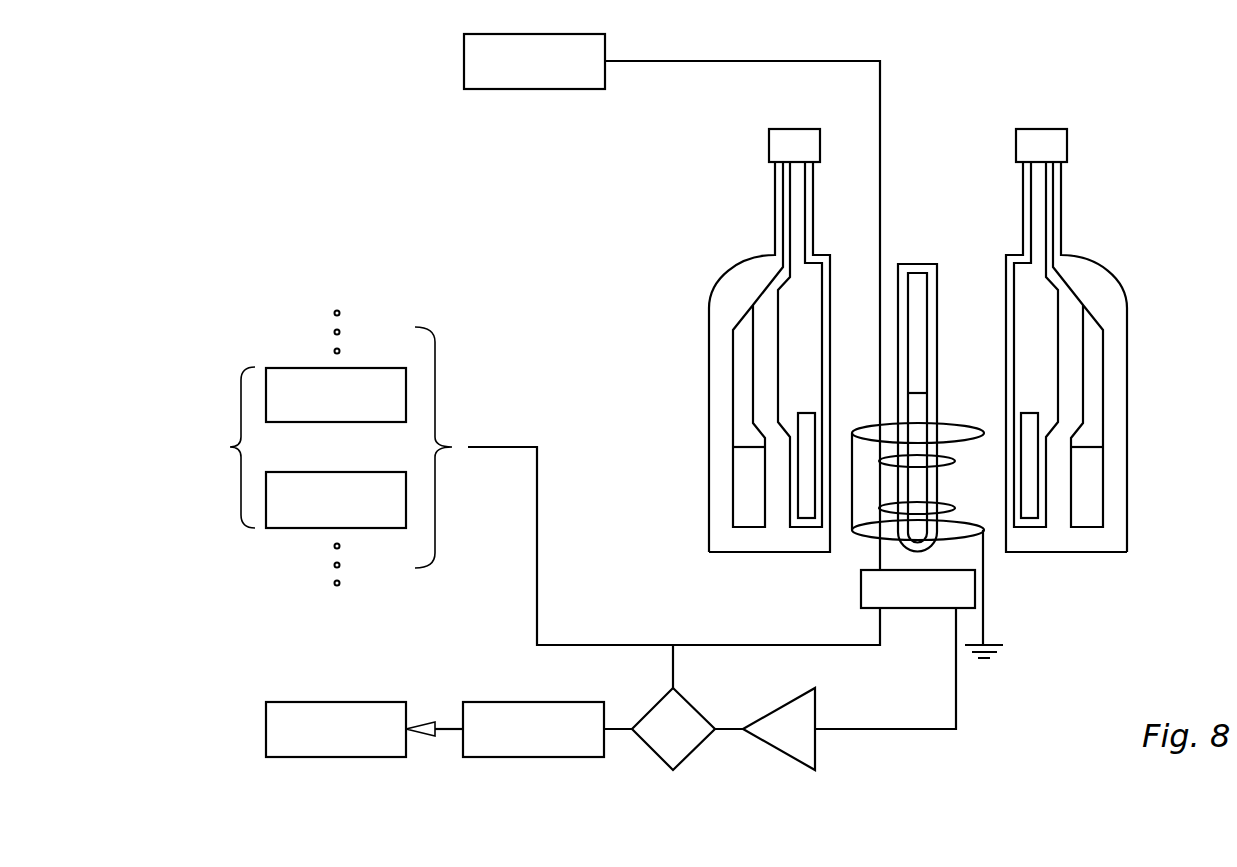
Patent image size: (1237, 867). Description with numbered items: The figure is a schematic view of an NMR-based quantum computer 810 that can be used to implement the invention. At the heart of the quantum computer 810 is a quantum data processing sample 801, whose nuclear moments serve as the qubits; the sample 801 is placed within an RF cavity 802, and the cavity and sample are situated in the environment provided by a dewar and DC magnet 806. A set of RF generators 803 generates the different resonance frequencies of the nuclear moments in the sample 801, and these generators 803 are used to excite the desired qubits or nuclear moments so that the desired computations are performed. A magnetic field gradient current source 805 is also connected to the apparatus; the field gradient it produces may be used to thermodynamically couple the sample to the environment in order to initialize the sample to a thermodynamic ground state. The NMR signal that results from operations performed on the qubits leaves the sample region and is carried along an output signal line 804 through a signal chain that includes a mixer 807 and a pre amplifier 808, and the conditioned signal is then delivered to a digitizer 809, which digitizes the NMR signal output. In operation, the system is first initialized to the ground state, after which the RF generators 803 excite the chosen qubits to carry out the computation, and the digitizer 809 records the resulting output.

The quantum data processing sample 801 is at (918, 488).
The RF cavity 802 is at (955, 417).
The set of RF generators 803 is at (319, 448).
The output signal line 804 is at (533, 729).
The magnetic field gradient current source 805 is at (534, 61).
The dewar and DC magnet 806 is at (1140, 471).
The mixer 807 is at (673, 729).
The pre amplifier 808 is at (779, 729).
The digitizer 809 is at (265, 719).
The quantum computer 810 is at (368, 192).